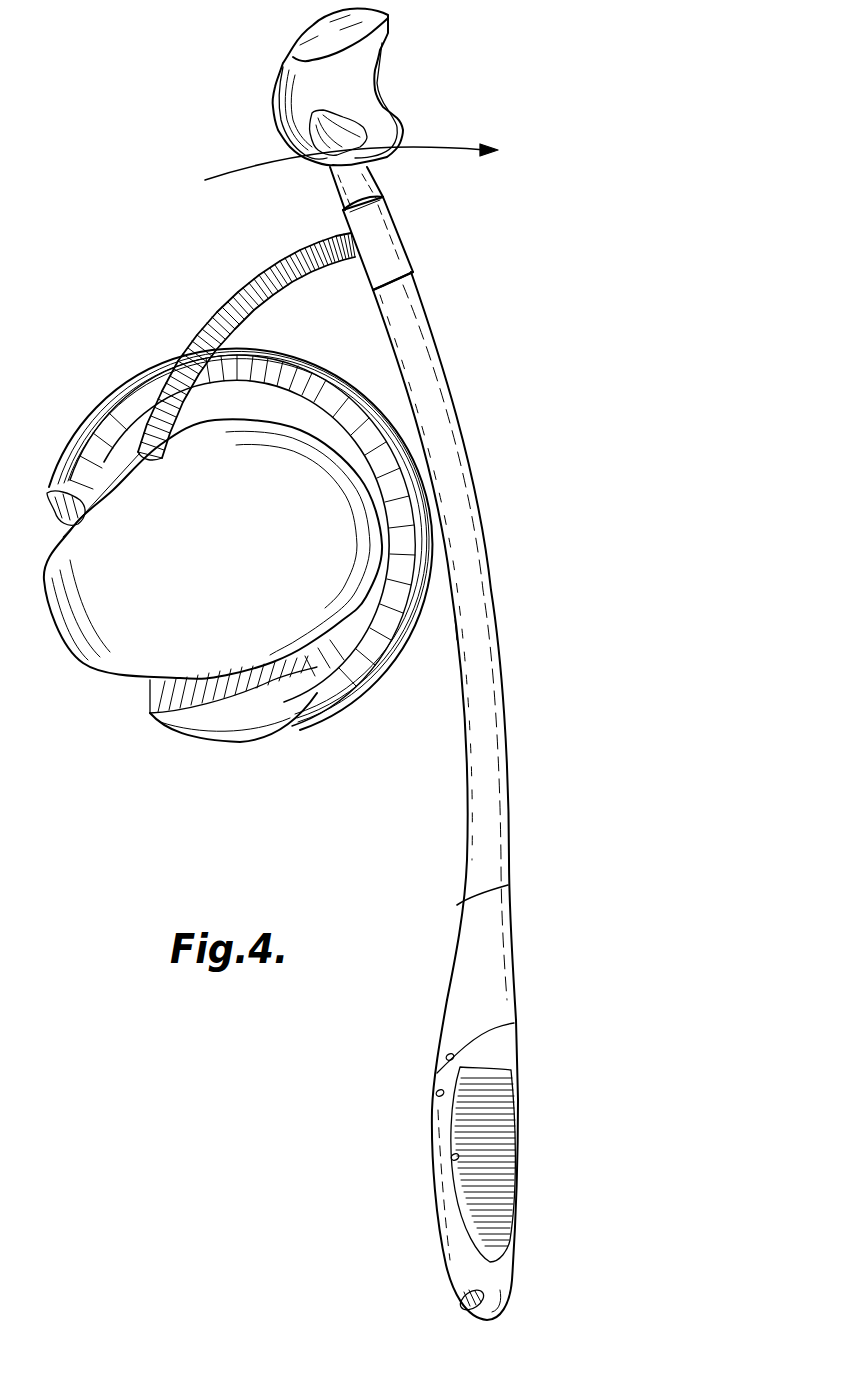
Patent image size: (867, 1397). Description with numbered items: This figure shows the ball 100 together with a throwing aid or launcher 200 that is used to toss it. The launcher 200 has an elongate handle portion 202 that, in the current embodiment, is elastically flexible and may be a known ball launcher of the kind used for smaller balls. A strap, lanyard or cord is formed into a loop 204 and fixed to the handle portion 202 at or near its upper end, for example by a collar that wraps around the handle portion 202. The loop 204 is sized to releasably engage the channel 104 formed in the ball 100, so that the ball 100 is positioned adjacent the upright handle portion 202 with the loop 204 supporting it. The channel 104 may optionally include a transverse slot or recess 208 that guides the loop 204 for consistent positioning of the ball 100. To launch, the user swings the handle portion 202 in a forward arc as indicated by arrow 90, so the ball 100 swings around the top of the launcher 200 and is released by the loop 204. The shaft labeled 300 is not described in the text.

The arrow 90 is at (440, 144).
The launcher 200 is at (407, 241).
The shaft 300 is at (448, 369).
The handle portion 202 is at (468, 483).
The loop 204 is at (212, 322).
The transverse slot or recess 208 is at (203, 408).
The channel 104 is at (160, 690).
The ball 100 is at (190, 745).